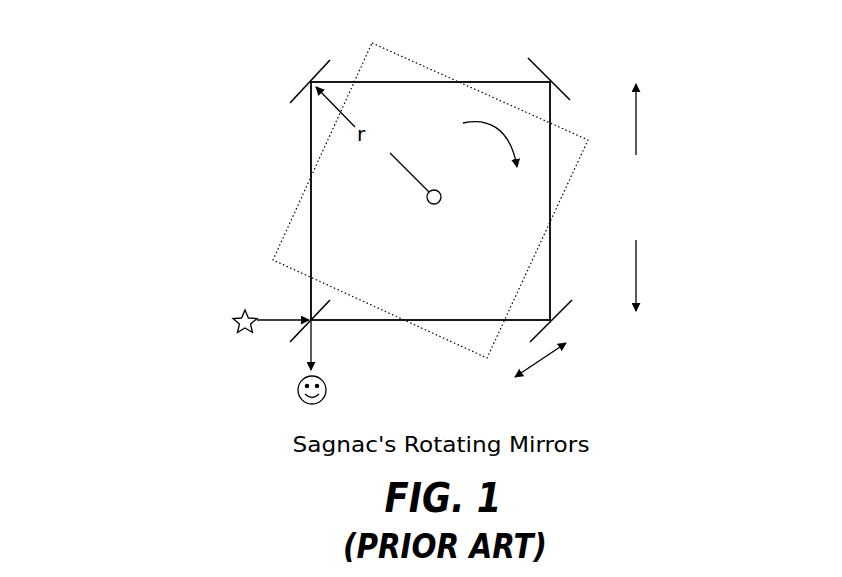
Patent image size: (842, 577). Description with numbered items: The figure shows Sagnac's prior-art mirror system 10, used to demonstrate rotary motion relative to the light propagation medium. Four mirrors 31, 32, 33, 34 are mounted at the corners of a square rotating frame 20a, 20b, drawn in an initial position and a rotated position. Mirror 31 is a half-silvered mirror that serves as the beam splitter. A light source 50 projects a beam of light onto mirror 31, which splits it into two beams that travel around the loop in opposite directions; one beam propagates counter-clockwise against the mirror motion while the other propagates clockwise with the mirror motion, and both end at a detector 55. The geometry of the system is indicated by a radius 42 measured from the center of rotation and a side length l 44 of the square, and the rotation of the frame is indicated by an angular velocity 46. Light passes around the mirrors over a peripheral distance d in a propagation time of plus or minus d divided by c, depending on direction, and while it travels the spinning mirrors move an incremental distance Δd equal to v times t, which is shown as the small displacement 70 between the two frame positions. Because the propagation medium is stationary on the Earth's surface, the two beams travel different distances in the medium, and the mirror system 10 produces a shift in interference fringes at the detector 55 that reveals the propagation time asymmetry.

The mirror system 10 is at (208, 62).
The rotating frame 20a is at (311, 135).
The rotating frame 20b is at (390, 50).
The half-silvered mirror 31 is at (325, 312).
The mirror 32 is at (567, 310).
The mirror 33 is at (540, 65).
The mirror 34 is at (325, 62).
The radius 42 is at (404, 172).
The side length l 44 is at (637, 110).
The angular velocity 46 is at (500, 140).
The light source 50 is at (235, 320).
The detector 55 is at (297, 390).
The path difference Δd 70 is at (550, 355).